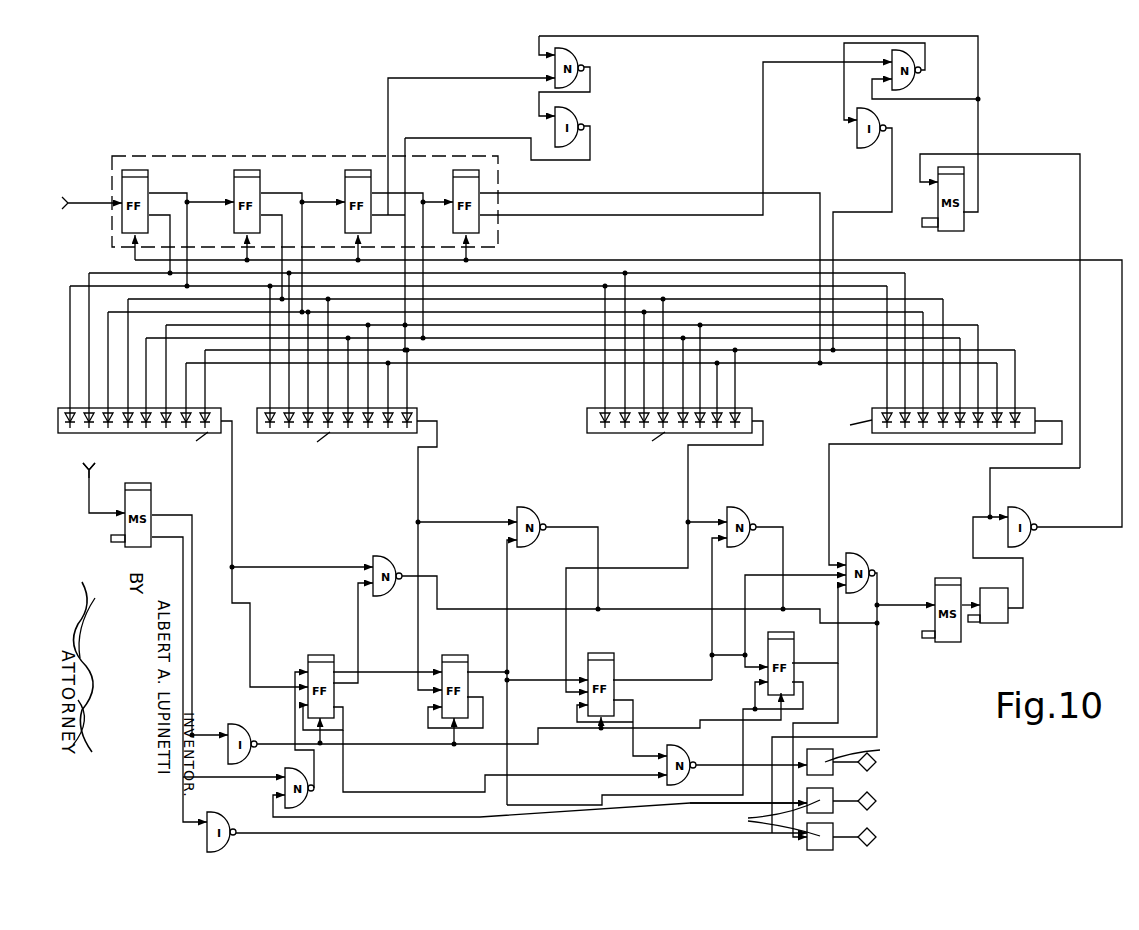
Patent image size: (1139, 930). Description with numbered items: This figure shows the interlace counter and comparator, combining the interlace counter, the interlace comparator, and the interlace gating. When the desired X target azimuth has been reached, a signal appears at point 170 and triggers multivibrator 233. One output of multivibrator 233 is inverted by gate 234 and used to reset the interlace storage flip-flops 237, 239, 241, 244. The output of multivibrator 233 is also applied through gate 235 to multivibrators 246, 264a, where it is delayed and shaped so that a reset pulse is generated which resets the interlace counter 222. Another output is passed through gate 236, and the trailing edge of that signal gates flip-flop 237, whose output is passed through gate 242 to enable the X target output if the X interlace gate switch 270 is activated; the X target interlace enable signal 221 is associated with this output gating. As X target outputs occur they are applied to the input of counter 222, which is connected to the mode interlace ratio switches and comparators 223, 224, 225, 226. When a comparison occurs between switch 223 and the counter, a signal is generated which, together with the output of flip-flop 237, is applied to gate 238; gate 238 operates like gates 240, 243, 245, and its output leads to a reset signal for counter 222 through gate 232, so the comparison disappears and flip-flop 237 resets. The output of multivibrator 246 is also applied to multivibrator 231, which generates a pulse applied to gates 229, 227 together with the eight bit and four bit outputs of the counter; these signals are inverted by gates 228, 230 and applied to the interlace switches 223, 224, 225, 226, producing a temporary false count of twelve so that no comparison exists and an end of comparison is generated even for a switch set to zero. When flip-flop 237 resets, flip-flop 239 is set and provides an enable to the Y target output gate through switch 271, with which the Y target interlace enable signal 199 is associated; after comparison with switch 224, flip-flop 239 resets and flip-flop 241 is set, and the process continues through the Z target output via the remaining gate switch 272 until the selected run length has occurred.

The X target azimuth input point 170 is at (97, 476).
The Y target interlace enable signal 199 is at (862, 801).
The X target interlace enable signal 221 is at (858, 846).
The interlace counter 222 is at (330, 136).
The X interlace switch/comparator 223 is at (209, 410).
The Y interlace switch/comparator 224 is at (410, 410).
The interlace switch/comparator 225 is at (745, 410).
The Z interlace switch/comparator 226 is at (1022, 410).
The gate 227 is at (578, 65).
The inverter gate 228 is at (578, 124).
The gate 229 is at (910, 66).
The inverter gate 230 is at (871, 133).
The multivibrator 231 is at (946, 197).
The reset gate 232 is at (1020, 516).
The multivibrator 233 is at (152, 504).
The inverter gate 234 is at (235, 731).
The gate 235 is at (228, 826).
The gate 236 is at (285, 776).
The interlace storage flip-flop 237 is at (318, 658).
The gate 238 is at (373, 567).
The interlace storage flip-flop 239 is at (453, 656).
The gate 240 is at (529, 513).
The interlace storage flip-flop 241 is at (600, 656).
The gate 242 is at (685, 763).
The gate 243 is at (736, 513).
The interlace storage flip-flop 244 is at (791, 633).
The gate 245 is at (858, 562).
The multivibrator 246 is at (949, 586).
The monostable multivibrator 264a is at (1001, 583).
The X interlace gate switch 270 is at (821, 761).
The Y interlace gate switch 271 is at (822, 801).
The interlace enable gate 272 is at (807, 848).